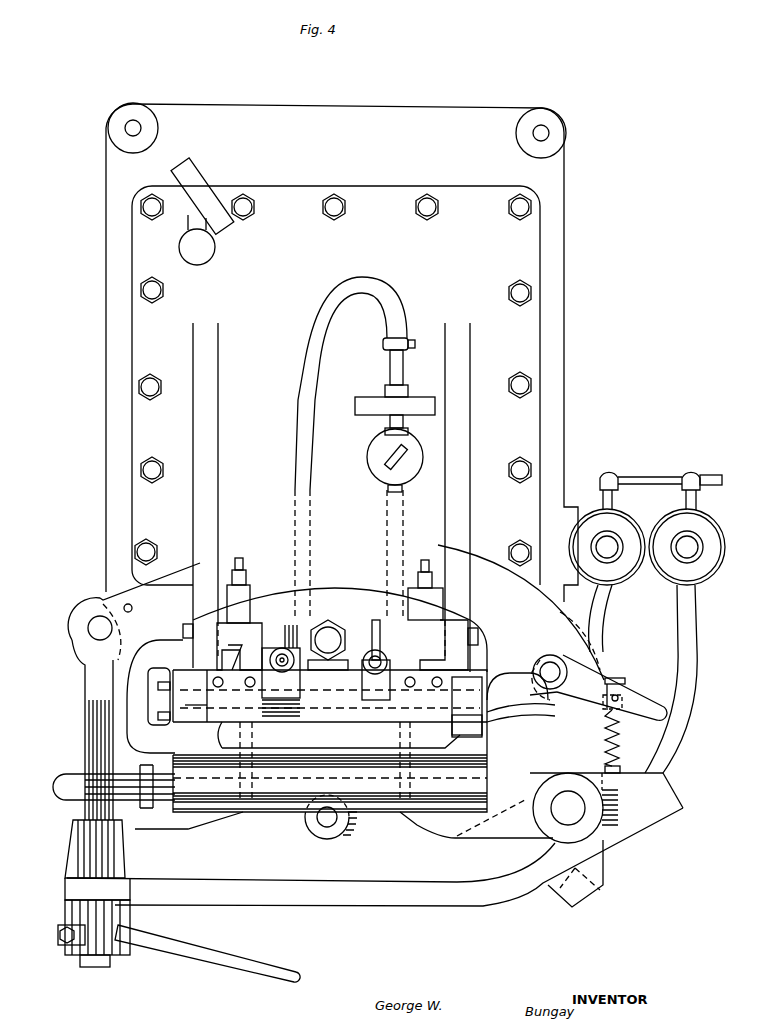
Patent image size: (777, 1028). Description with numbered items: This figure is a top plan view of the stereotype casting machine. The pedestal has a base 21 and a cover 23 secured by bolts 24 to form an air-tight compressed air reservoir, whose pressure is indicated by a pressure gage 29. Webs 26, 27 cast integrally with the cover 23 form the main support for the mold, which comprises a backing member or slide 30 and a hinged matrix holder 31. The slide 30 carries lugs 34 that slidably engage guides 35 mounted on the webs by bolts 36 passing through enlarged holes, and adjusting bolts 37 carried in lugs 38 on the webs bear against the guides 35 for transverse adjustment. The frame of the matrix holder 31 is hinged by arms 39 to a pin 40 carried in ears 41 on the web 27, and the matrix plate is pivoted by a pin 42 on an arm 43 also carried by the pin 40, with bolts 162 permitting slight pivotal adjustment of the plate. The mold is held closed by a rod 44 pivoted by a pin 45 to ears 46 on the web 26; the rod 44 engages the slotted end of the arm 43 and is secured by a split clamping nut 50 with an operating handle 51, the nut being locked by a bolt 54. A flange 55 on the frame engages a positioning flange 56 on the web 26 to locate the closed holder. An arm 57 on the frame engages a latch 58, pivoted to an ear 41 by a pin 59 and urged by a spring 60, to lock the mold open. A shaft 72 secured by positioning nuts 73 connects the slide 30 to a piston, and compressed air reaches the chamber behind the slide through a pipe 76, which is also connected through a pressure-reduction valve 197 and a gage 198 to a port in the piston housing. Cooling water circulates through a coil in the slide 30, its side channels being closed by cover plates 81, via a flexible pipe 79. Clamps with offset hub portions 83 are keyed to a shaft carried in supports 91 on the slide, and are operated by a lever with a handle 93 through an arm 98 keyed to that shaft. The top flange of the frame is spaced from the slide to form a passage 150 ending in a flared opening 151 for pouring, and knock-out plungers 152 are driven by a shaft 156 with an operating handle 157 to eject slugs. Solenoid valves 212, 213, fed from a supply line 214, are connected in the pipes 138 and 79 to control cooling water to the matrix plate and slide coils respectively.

The base 21 is at (407, 117).
The cover 23 is at (155, 323).
The bolts 24 is at (152, 220).
The web 26 is at (214, 450).
The web 27 is at (470, 450).
The pressure gage 29 is at (187, 186).
The slide 30 is at (437, 700).
The matrix holder 31 is at (470, 757).
The lugs 34 is at (222, 652).
The guides 35 is at (251, 631).
The bolts 36 is at (183, 631).
The adjusting bolts 37 is at (239, 567).
The lugs 38 is at (245, 608).
The arms 39 is at (522, 838).
The pin 40 is at (572, 812).
The ears 41 is at (562, 630).
The pin 42 is at (330, 823).
The arm 43 is at (351, 906).
The rod 44 is at (90, 731).
The pin 45 is at (98, 628).
The ears 46 is at (128, 590).
The split clamping nut 50 is at (113, 956).
The operating handle 51 is at (210, 956).
The bolt 54 is at (60, 938).
The flange 55 is at (157, 698).
The positioning flange 56 is at (141, 662).
The arm 57 is at (641, 813).
The latch 58 is at (648, 706).
The pin 59 is at (550, 660).
The spring 60 is at (613, 748).
The shaft 72 is at (328, 634).
The positioning nuts 73 is at (346, 640).
The pipe 76 is at (297, 632).
The flexible pipe 79 is at (603, 615).
The cover plates 81 is at (158, 696).
The hub portions 83 is at (199, 722).
The supports 91 is at (324, 707).
The handle 93 is at (280, 650).
The arm 98 is at (290, 714).
The pipe 138 is at (700, 740).
The passage 150 is at (378, 722).
The flared opening 151 is at (345, 738).
The knock-out plungers 152 is at (247, 743).
The shaft 156 is at (86, 774).
The operating handle 157 is at (60, 797).
The bolts 162 is at (440, 755).
The pressure-reduction valve 197 is at (372, 456).
The gage 198 is at (362, 405).
The solenoid valve 212 is at (699, 524).
The solenoid valve 213 is at (618, 523).
The supply line 214 is at (643, 482).